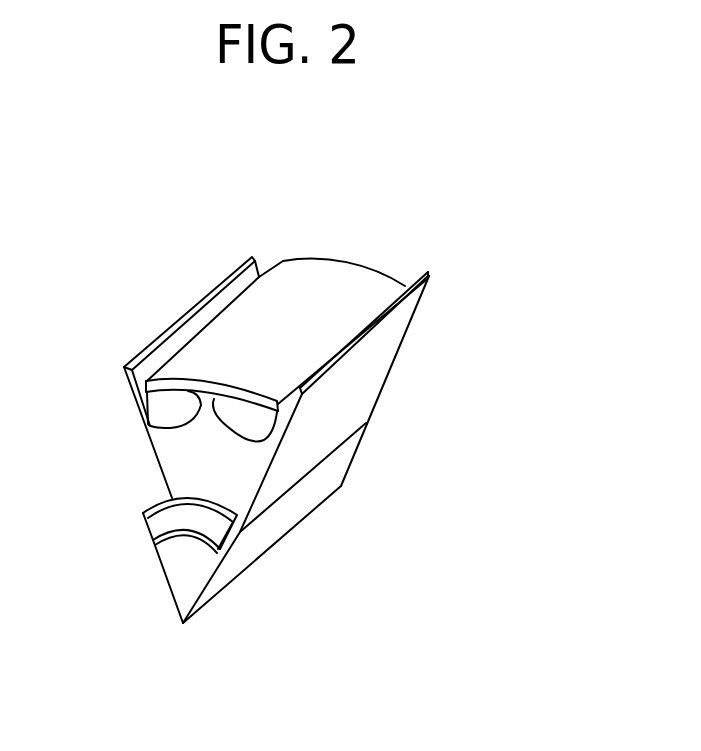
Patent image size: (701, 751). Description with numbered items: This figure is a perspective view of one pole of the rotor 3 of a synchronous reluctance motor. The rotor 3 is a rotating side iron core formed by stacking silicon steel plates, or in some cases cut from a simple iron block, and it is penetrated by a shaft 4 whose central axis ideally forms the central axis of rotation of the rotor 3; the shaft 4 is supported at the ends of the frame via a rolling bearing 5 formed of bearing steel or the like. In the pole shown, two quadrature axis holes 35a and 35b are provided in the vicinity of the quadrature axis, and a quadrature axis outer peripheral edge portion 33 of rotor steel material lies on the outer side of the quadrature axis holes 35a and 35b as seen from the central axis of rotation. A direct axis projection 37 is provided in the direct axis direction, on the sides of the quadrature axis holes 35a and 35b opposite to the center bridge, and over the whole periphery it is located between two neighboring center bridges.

The rotor 3 is at (396, 213).
The shaft 4 is at (272, 523).
The rolling bearing 5 is at (163, 518).
The quadrature axis outer peripheral edge portion 33 is at (299, 281).
The quadrature axis hole 35a is at (177, 397).
The quadrature axis hole 35b is at (258, 421).
The direct axis projection 37 is at (163, 330).